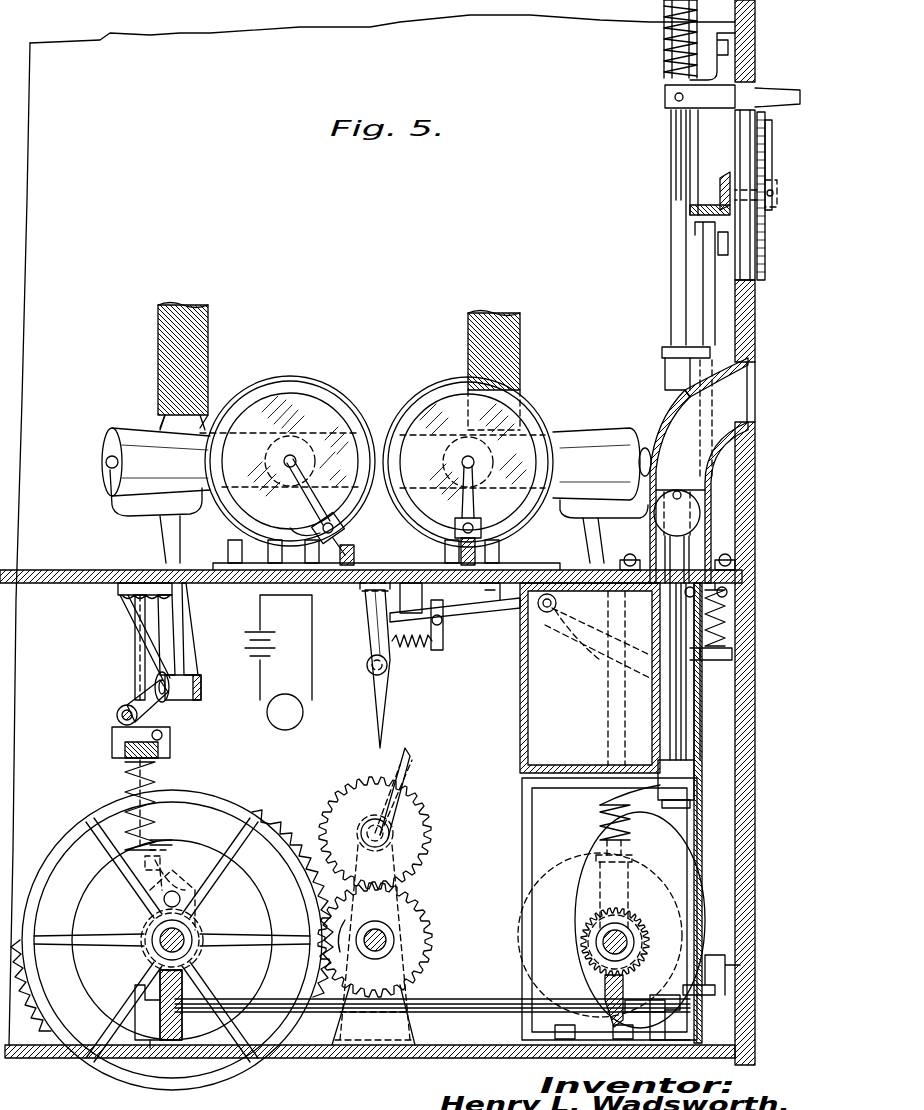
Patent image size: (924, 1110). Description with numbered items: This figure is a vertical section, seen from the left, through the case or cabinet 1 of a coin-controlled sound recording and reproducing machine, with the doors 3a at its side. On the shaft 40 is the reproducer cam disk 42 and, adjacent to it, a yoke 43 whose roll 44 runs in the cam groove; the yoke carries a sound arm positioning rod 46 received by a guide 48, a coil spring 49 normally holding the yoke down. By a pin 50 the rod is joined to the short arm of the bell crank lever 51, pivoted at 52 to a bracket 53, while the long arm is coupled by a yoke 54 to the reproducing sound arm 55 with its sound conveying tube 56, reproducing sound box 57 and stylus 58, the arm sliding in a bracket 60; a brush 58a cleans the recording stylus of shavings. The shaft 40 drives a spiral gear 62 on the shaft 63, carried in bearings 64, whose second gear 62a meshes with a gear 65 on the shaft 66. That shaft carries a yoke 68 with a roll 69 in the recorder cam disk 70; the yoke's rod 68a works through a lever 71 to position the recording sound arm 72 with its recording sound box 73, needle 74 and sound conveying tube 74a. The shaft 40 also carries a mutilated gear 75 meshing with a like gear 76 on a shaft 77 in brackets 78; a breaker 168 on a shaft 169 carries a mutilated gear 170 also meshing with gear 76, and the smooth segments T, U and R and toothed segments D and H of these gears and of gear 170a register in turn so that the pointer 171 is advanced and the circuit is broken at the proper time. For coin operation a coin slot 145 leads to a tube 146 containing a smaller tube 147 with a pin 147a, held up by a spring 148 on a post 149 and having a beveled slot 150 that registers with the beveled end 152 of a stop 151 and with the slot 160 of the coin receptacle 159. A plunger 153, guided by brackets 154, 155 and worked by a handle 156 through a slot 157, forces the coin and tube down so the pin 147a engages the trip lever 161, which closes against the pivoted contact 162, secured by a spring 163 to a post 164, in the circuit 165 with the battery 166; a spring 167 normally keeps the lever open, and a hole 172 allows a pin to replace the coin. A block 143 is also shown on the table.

The case or cabinet 1 is at (137, 54).
The doors 3a is at (745, 812).
The shaft 40 is at (186, 952).
The reproducer cam disk 42 is at (80, 918).
The yoke 43 is at (165, 880).
The roll 44 is at (185, 890).
The sound arm positioning rod 46 is at (136, 652).
The guide 48 is at (160, 752).
The coil spring 49 is at (125, 782).
The pin 50 is at (117, 720).
The bell crank sound arm positioning lever 51 is at (160, 712).
The pivot 52 is at (200, 683).
The bracket 53 is at (172, 614).
The yoke 54 is at (130, 517).
The reproducing sound arm 55 is at (138, 436).
The sound conveying tube 56 is at (212, 325).
The reproducing sound box 57 is at (318, 392).
The stylus 58 is at (344, 546).
The brush 58a is at (497, 523).
The bracket 60 is at (235, 546).
The spiral gear 62 is at (170, 1042).
The second spiral gear 62a is at (606, 986).
The shaft 63 is at (450, 1012).
The bearings 64 is at (160, 1002).
The gear 65 is at (592, 956).
The shaft 66 is at (603, 945).
The yoke 68 is at (626, 885).
The sound arm positioning rod 68a is at (605, 814).
The roll 69 is at (628, 910).
The recorder cam disk 70 is at (652, 860).
The lever 71 is at (592, 550).
The recording sound arm 72 is at (597, 440).
The recording sound box 73 is at (450, 390).
The needle 74 is at (455, 550).
The sound conveying tube 74a is at (522, 323).
The mutilated gear 75 is at (122, 1070).
The mutilated gear 76 is at (420, 960).
The shaft 77 is at (377, 955).
The brackets 78 is at (342, 1030).
The block 143 is at (369, 557).
The coin-receiving slot 145 is at (757, 380).
The tube 146 is at (712, 503).
The second smaller tube 147 is at (712, 556).
The laterally extended pin 147a is at (728, 591).
The spring 148 is at (727, 632).
The post 149 is at (733, 662).
The beveled slot 150 is at (660, 555).
The stop 151 is at (686, 738).
The beveled upper end 152 is at (690, 672).
The plunger 153 is at (677, 272).
The bracket 154 is at (662, 352).
The bracket 155 is at (666, 80).
The handle 156 is at (782, 92).
The slot 157 is at (745, 148).
The coin receptacle 159 is at (522, 712).
The coin-receiving slot 160 is at (652, 650).
The trip lever 161 is at (500, 612).
The pivoted contact 162 is at (372, 625).
The positioning spring 163 is at (404, 669).
The post 164 is at (444, 648).
The circuit 165 is at (278, 662).
The battery 166 is at (256, 654).
The spring 167 is at (574, 599).
The breaker 168 is at (406, 768).
The shaft 169 is at (388, 836).
The mutilated gear 170 is at (765, 270).
The gear 170a is at (420, 870).
The pointer 171 is at (770, 150).
The hole 172 is at (677, 491).
The gear segment D is at (296, 833).
The toothed segment H is at (36, 1042).
The smooth segment R is at (177, 1090).
The smooth-faced segment T is at (206, 802).
The smooth-faced segment U is at (362, 797).